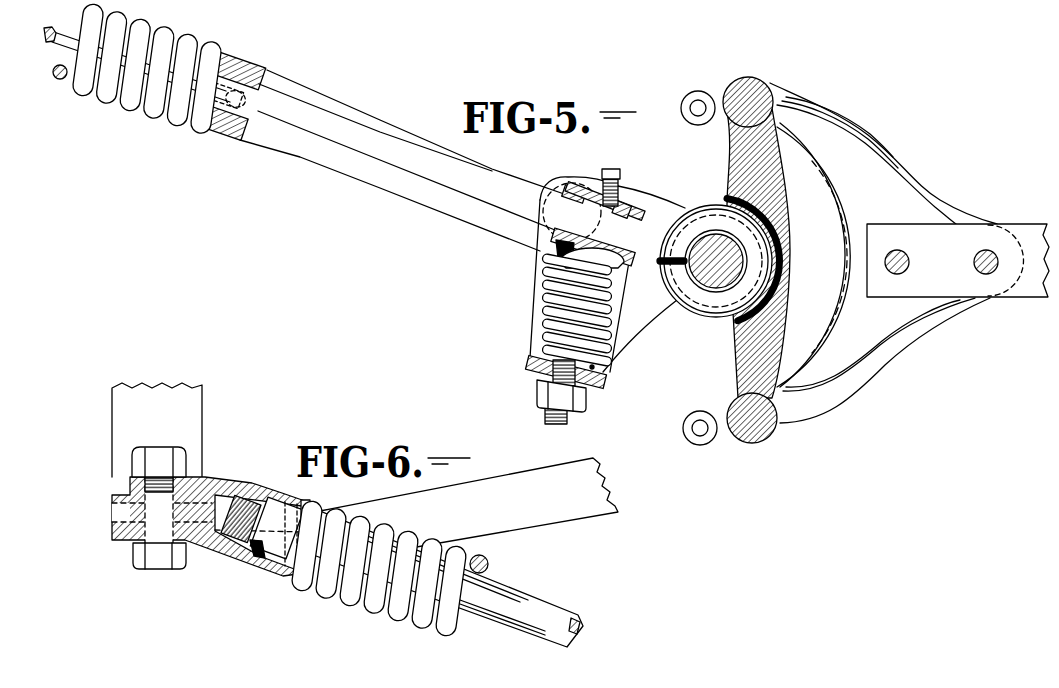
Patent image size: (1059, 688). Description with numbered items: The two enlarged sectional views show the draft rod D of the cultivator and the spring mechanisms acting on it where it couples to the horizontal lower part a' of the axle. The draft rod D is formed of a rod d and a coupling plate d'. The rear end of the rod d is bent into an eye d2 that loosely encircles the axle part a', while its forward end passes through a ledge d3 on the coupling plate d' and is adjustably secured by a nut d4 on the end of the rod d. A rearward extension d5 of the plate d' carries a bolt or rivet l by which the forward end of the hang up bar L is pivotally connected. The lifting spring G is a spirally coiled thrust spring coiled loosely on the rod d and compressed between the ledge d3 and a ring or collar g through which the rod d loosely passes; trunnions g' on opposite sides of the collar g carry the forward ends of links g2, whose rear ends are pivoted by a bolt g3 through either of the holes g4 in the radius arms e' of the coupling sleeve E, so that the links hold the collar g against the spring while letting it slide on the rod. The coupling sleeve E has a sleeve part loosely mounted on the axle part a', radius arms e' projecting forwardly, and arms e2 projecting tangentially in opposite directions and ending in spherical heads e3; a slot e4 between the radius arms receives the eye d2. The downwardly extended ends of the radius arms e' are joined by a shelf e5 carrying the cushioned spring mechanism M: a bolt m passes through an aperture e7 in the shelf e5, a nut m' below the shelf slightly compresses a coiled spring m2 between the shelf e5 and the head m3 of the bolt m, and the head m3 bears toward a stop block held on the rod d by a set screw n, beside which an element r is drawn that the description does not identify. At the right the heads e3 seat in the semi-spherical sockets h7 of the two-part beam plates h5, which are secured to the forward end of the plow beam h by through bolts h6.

In FIG. 5, the lifting spring G is at (130, 97).
In FIG. 6, the lifting spring G is at (400, 607).
In FIG. 5, the rod d is at (305, 111).
In FIG. 6, the rod d is at (465, 581).
In FIG. 5, the draft rod D is at (357, 145).
In FIG. 6, the draft rod D is at (525, 614).
In FIG. 5, the ring or collar g is at (229, 88).
In FIG. 5, the trunnions g' is at (248, 102).
In FIG. 5, the links g2 is at (427, 195).
In FIG. 5, the bolt g3 is at (556, 248).
In FIG. 5, the holes g4 is at (562, 192).
In FIG. 5, the coupling sleeve E is at (646, 279).
In FIG. 5, the radius arms e' is at (563, 274).
In FIG. 5, the arms e2 is at (740, 155).
In FIG. 5, the spherical-shaped head e3 is at (744, 97).
In FIG. 5, the slot e4 is at (786, 238).
In FIG. 5, the shelf e5 is at (540, 361).
In FIG. 5, the aperture e7 is at (577, 385).
In FIG. 5, the bolt m is at (546, 381).
In FIG. 5, the nut m' is at (537, 396).
In FIG. 5, the spirally coiled spring m2 is at (550, 281).
In FIG. 5, the head m3 is at (592, 262).
In FIG. 5, the cushioned spring mechanism M is at (556, 316).
In FIG. 5, the set screw n is at (610, 173).
In FIG. 5, the cap bar r is at (631, 207).
In FIG. 5, the lower part of the axle a' is at (702, 225).
In FIG. 5, the eye d2 is at (669, 296).
In FIG. 5, the beam h is at (1012, 228).
In FIG. 5, the beam plate parts h5 is at (893, 188).
In FIG. 5, the through bolts h6 is at (903, 257).
In FIG. 5, the semi-spherical sockets h7 is at (767, 86).
In FIG. 6, the coupling plate d' is at (208, 513).
In FIG. 6, the ledge d3 is at (262, 556).
In FIG. 6, the nut d4 is at (250, 557).
In FIG. 6, the rearward extension d5 is at (308, 522).
In FIG. 6, the bolt or rivet l is at (301, 562).
In FIG. 6, the hang up bar L is at (469, 510).